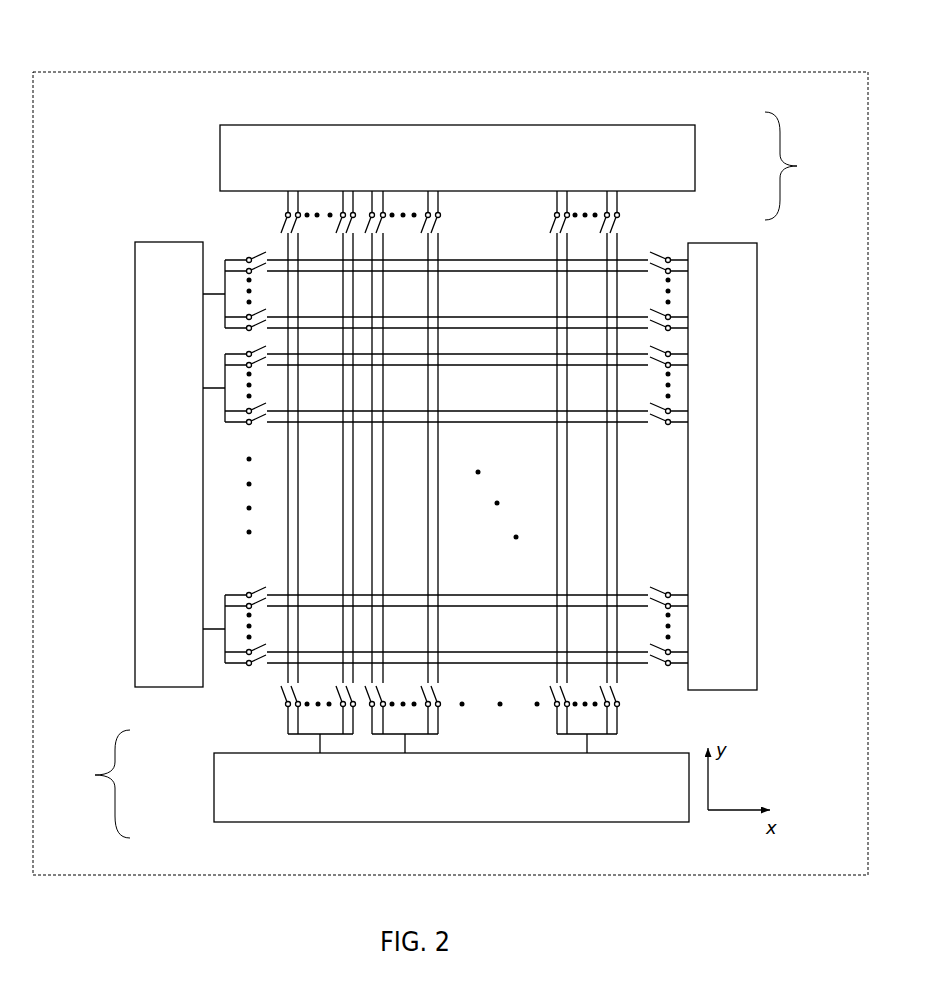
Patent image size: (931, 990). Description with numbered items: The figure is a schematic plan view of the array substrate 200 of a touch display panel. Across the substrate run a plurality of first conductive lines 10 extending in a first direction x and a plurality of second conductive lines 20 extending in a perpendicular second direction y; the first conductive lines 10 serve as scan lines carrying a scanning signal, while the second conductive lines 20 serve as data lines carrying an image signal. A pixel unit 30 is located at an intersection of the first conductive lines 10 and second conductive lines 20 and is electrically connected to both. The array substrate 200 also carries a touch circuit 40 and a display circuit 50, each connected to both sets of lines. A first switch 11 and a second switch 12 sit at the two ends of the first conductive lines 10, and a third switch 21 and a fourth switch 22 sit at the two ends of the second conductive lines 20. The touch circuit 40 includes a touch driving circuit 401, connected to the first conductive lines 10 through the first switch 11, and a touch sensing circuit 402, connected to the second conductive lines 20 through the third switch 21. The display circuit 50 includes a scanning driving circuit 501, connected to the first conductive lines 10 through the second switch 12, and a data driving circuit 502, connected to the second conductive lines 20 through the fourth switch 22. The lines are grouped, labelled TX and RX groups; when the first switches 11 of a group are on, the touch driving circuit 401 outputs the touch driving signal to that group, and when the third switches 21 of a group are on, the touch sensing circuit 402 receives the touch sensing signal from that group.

The array substrate 200 is at (457, 70).
The display circuit 50 is at (796, 166).
The data driving circuit 502 is at (700, 124).
The scanning driving circuit 501 is at (705, 238).
The touch circuit 40 is at (97, 784).
The touch driving circuit 401 is at (186, 690).
The touch sensing circuit 402 is at (210, 798).
The second conductive lines 20 is at (441, 546).
The fourth switch 22 is at (444, 212).
The third switch 21 is at (442, 698).
The first conductive lines 10 is at (457, 444).
The pixel unit 30 is at (435, 598).
The first switch 11 is at (247, 252).
The second switch 12 is at (690, 233).